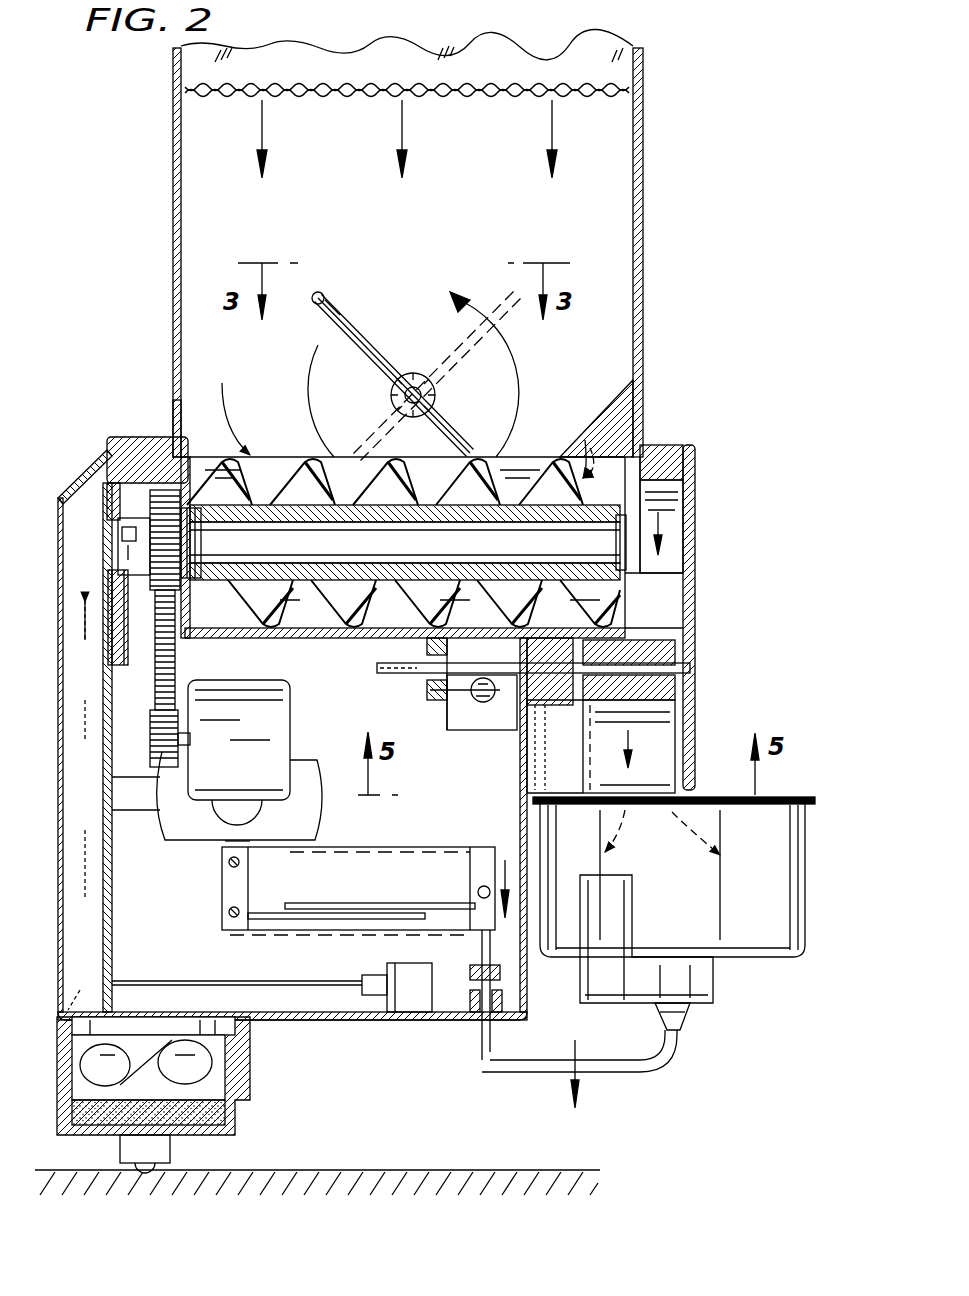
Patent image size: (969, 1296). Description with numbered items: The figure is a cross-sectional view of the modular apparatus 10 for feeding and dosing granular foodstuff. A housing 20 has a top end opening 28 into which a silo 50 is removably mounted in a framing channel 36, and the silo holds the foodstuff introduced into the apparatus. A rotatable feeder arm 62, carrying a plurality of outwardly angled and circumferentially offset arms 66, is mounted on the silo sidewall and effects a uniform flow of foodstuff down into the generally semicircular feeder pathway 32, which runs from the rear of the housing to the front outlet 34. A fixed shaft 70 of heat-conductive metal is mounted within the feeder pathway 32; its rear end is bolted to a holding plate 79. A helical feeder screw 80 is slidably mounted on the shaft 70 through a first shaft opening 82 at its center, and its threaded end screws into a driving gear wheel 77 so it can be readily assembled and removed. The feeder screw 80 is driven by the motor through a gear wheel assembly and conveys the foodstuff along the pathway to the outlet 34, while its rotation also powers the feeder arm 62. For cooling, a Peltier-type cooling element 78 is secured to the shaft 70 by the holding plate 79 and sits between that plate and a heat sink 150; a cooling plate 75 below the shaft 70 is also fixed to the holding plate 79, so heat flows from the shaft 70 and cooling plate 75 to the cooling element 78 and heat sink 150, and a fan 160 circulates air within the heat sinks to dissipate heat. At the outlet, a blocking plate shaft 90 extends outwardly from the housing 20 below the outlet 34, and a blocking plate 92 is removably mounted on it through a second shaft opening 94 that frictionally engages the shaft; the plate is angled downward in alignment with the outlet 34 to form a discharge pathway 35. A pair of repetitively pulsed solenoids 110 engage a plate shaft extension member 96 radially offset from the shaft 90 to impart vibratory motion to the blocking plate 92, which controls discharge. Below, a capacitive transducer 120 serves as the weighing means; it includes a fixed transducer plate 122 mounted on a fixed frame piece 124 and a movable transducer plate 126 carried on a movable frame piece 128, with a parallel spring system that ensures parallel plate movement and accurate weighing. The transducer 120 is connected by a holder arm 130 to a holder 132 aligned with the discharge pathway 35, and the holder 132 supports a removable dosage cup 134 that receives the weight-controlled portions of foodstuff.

The modular apparatus 10 is at (697, 298).
The housing 20 is at (140, 452).
The top end opening 28 is at (670, 445).
The feeder pathway 32 is at (597, 488).
The outlet 34 is at (666, 590).
The discharge pathway 35 is at (660, 745).
The framing channel 36 is at (175, 418).
The silo 50 is at (645, 188).
The feeder arm 62 is at (322, 318).
The arms 66 is at (325, 300).
The fixed shaft 70 is at (600, 562).
The cooling plate 75 is at (293, 655).
The driving gear wheel 77 is at (140, 482).
The cooling element 78 is at (124, 600).
The holding plate 79 is at (130, 540).
The feeder screw 80 is at (586, 455).
The first shaft opening 82 is at (440, 530).
The blocking plate shaft 90 is at (680, 668).
The blocking plate 92 is at (670, 690).
The second shaft opening 94 is at (670, 648).
The plate shaft extension member 96 is at (465, 700).
The solenoids 110 is at (503, 722).
The capacitive transducer 120 is at (265, 886).
The fixed transducer plate 122 is at (300, 919).
The fixed frame piece 124 is at (225, 866).
The movable transducer plate 126 is at (330, 903).
The movable frame piece 128 is at (480, 862).
The holder arm 130 is at (612, 1072).
The holder 132 is at (712, 978).
The dosage cup 134 is at (805, 945).
The heat sink 150 is at (63, 806).
The fan 160 is at (185, 1065).